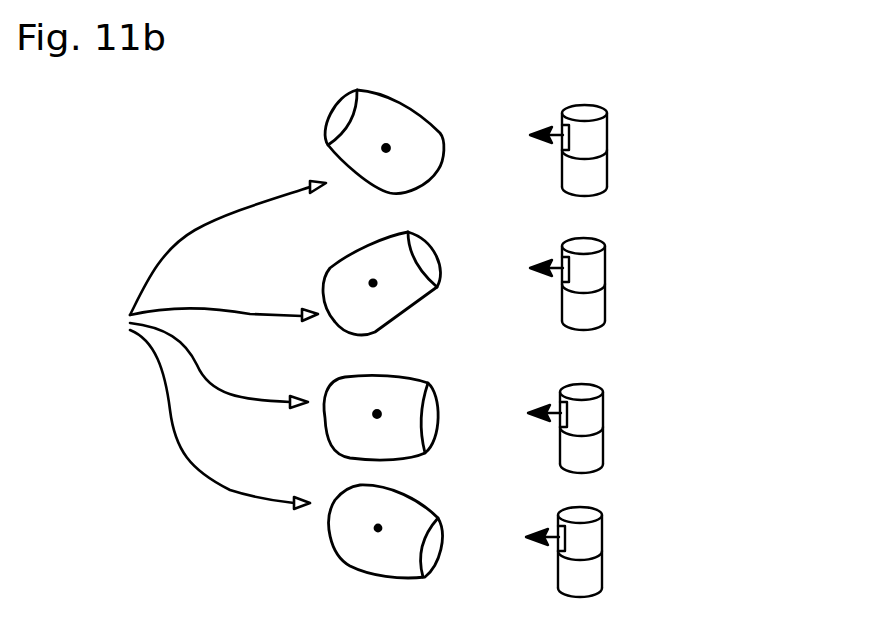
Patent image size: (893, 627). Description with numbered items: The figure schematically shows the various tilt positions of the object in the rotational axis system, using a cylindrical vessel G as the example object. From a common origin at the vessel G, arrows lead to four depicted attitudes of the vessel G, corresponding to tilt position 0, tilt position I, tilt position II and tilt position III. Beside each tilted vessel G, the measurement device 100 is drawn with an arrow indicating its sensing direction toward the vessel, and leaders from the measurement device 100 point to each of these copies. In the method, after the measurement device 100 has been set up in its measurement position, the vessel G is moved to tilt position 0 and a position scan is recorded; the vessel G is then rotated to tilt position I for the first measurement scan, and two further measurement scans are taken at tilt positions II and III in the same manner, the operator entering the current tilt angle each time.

The vessel G is at (211, 345).
The tilt position 0 is at (345, 142).
The tilt position I is at (257, 300).
The tilt position II is at (257, 431).
The tilt position III is at (263, 543).
The measurement device 100 is at (658, 516).